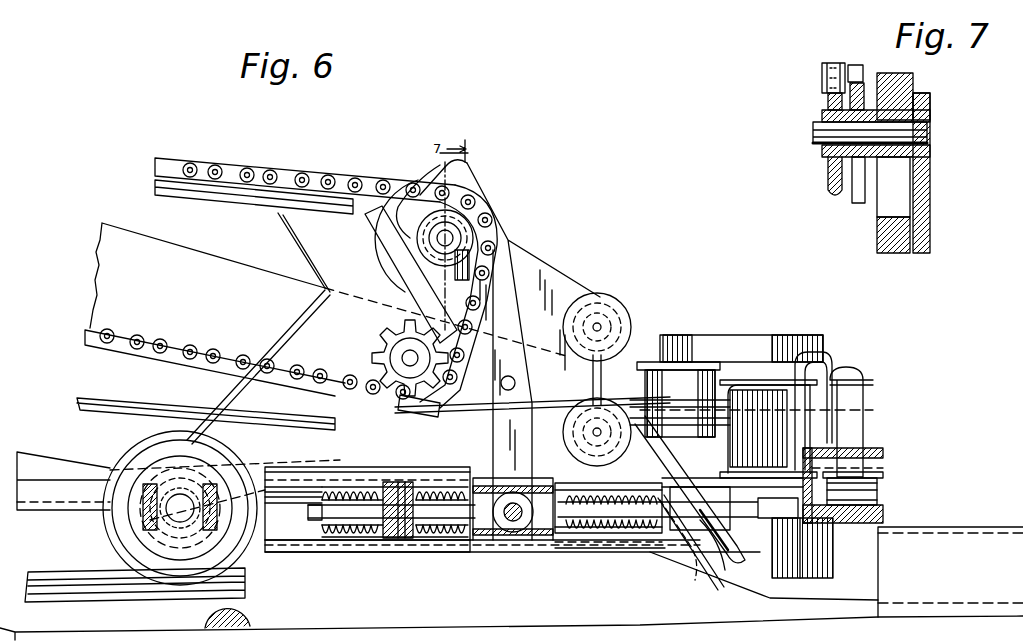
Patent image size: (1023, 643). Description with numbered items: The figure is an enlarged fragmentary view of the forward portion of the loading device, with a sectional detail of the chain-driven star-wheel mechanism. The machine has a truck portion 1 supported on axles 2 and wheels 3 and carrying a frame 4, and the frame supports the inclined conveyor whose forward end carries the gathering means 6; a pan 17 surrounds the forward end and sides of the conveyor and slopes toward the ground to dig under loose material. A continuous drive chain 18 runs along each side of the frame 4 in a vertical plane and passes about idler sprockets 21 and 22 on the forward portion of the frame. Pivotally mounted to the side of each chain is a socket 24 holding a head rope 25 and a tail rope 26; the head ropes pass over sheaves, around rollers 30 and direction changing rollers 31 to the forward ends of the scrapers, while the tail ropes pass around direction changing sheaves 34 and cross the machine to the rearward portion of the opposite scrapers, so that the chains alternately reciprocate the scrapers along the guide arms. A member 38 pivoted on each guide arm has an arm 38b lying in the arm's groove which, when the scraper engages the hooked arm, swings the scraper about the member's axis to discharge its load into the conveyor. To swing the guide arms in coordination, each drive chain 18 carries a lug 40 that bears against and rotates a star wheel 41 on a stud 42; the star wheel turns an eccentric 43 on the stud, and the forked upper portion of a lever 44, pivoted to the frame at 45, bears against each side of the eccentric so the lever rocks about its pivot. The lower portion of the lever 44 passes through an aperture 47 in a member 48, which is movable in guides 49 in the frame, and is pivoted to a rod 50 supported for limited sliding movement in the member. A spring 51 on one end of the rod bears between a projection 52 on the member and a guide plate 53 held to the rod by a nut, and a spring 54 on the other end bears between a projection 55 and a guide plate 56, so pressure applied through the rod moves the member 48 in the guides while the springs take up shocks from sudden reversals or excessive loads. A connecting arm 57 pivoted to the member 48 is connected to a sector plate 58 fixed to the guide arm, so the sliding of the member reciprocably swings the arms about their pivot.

In FIG. 6, the truck portion 1 is at (50, 500).
In FIG. 6, the axle 2 is at (130, 530).
In FIG. 6, the wheel 3 is at (240, 556).
In FIG. 6, the frame 4 is at (300, 240).
In FIG. 7, the frame 4 is at (932, 200).
In FIG. 6, the gathering means 6 is at (880, 502).
In FIG. 6, the pan 17 is at (957, 527).
In FIG. 6, the drive chain 18 is at (318, 172).
In FIG. 7, the drive chain 18 is at (816, 83).
In FIG. 6, the idler sprocket 21 is at (470, 168).
In FIG. 6, the idler sprocket 22 is at (388, 343).
In FIG. 6, the socket 24 is at (435, 415).
In FIG. 6, the head rope 25 is at (632, 345).
In FIG. 6, the tail rope 26 is at (650, 525).
In FIG. 6, the roller 30 is at (724, 383).
In FIG. 6, the direction changing roller 31 is at (760, 380).
In FIG. 6, the direction changing sheave 34 is at (718, 592).
In FIG. 6, the member 38 is at (886, 454).
In FIG. 6, the arm 38b is at (880, 487).
In FIG. 7, the lug 40 is at (857, 62).
In FIG. 6, the star wheel 41 is at (410, 296).
In FIG. 7, the star wheel 41 is at (856, 204).
In FIG. 6, the stud 42 is at (405, 256).
In FIG. 7, the stud 42 is at (818, 145).
In FIG. 6, the eccentric 43 is at (415, 208).
In FIG. 7, the eccentric 43 is at (886, 160).
In FIG. 6, the lever 44 is at (520, 327).
In FIG. 7, the lever 44 is at (878, 245).
In FIG. 6, the pivot 45 is at (516, 383).
In FIG. 6, the aperture 47 is at (540, 486).
In FIG. 6, the member 48 is at (563, 535).
In FIG. 6, the guide 49 is at (305, 550).
In FIG. 6, the rod 50 is at (520, 541).
In FIG. 6, the spring 51 is at (440, 540).
In FIG. 6, the projection 52 is at (463, 540).
In FIG. 6, the guide plate 53 is at (340, 540).
In FIG. 6, the spring 54 is at (583, 540).
In FIG. 6, the projection 55 is at (562, 543).
In FIG. 6, the guide plate 56 is at (672, 535).
In FIG. 6, the connecting arm 57 is at (690, 540).
In FIG. 6, the sector plate 58 is at (775, 550).